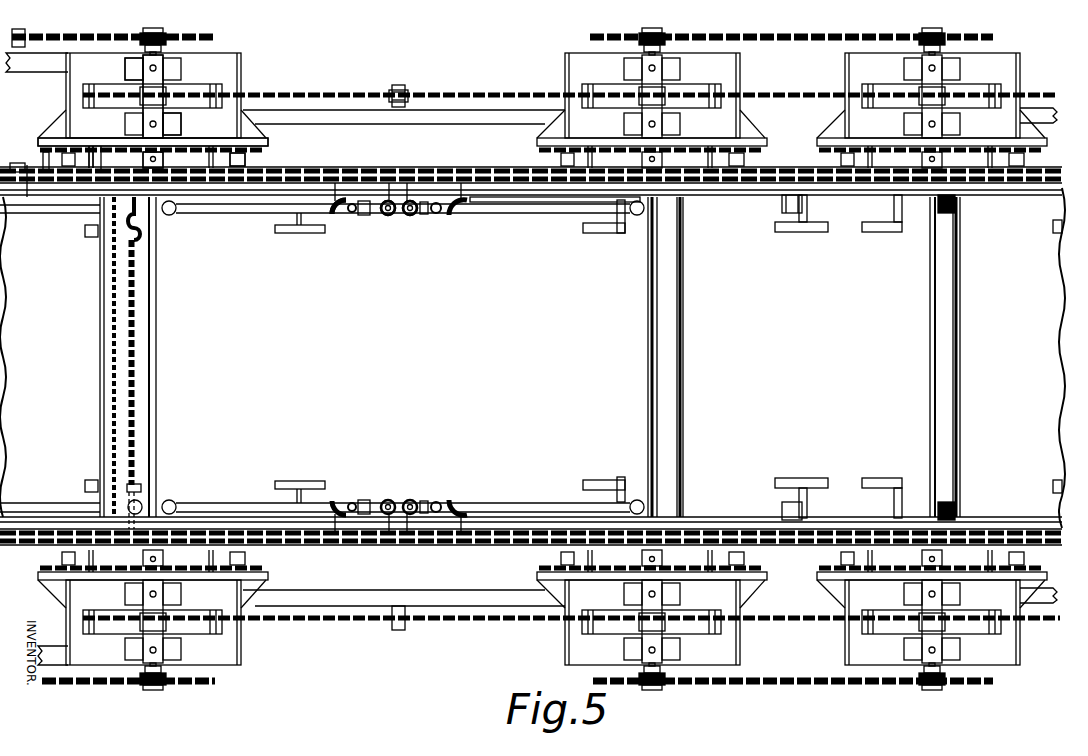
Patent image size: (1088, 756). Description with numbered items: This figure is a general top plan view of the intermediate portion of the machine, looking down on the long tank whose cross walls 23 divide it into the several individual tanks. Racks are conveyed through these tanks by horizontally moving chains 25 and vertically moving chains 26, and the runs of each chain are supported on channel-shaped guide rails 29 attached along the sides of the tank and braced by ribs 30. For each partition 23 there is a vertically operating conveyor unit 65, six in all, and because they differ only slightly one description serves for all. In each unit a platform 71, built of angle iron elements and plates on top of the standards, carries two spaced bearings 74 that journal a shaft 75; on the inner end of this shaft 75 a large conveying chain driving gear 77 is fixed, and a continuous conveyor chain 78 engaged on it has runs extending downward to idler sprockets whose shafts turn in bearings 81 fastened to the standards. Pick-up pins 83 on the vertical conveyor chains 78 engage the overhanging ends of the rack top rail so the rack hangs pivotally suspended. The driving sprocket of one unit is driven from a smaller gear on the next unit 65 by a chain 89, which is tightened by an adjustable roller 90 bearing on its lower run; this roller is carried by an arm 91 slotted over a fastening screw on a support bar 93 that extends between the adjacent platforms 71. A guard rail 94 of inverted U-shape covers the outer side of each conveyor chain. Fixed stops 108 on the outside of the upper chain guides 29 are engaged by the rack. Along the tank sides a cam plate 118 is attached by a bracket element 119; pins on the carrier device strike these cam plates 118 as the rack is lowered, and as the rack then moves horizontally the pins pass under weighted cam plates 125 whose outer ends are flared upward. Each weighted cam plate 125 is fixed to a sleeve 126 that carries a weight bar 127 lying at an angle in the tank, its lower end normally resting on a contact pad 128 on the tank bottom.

The cross walls 23 is at (157, 403).
The horizontally moving chains 25 is at (347, 180).
The vertically moving chains 26 is at (101, 150).
The channel-shaped guide rails 29 is at (386, 180).
The ribs 30 is at (420, 184).
The vertically operating conveyor unit 65 is at (53, 133).
The platform 71 is at (227, 57).
The bearings 74 is at (127, 70).
The shaft 75 is at (155, 86).
The conveying chain driving gear 77 is at (163, 162).
The continuous conveyor chain 78 is at (258, 146).
The bearings 81 is at (246, 162).
The pick-up pins 83 is at (43, 163).
The chain 89 is at (480, 93).
The adjustable roller 90 is at (394, 92).
The arm 91 is at (404, 92).
The support bar 93 is at (342, 125).
The guard rail 94 is at (88, 150).
The fixed stops 108 is at (63, 190).
The cam plate 118 is at (290, 234).
The bracket element 119 is at (285, 214).
The weighted cam plates 125 is at (600, 234).
The sleeve 126 is at (621, 234).
The weight bar 127 is at (557, 203).
The contact pad 128 is at (470, 214).